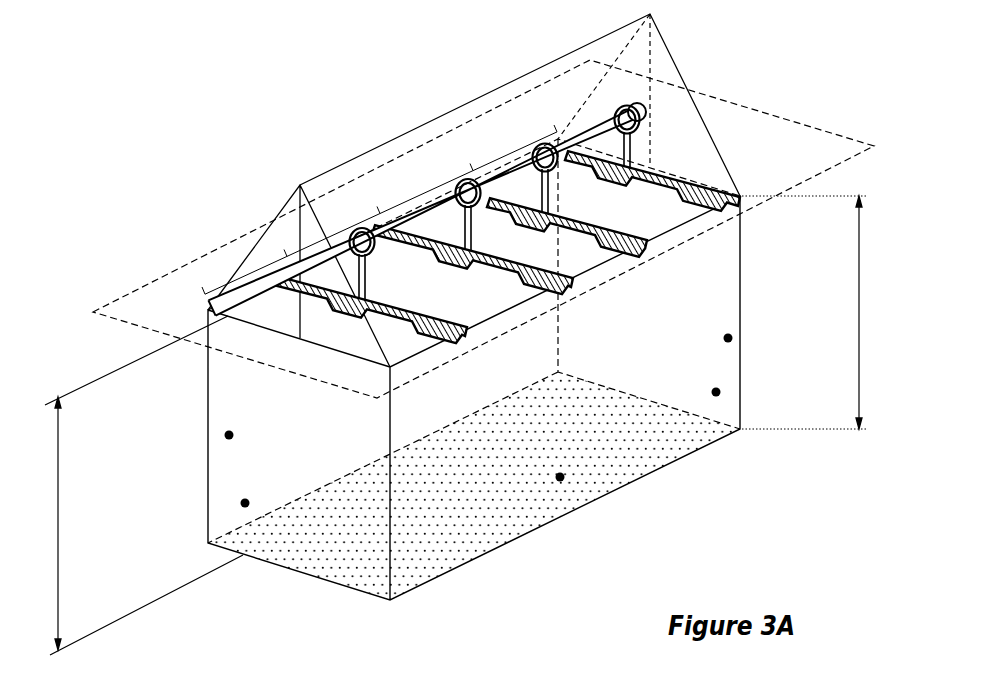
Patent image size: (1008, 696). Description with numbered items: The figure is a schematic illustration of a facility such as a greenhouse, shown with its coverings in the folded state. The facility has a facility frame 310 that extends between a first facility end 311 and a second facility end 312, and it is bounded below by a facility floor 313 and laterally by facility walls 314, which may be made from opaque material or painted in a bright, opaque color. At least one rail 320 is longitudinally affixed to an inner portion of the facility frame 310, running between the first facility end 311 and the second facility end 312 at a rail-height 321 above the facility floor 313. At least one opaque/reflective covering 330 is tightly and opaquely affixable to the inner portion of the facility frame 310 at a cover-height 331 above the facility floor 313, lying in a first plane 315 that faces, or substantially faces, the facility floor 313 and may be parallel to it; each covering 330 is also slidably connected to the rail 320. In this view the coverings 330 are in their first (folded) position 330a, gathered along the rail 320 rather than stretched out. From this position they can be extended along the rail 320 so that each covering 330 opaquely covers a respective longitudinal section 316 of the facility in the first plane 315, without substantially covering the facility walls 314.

The facility frame 310 is at (392, 530).
The first facility end 311 is at (688, 61).
The second facility end 312 is at (283, 235).
The facility floor 313 is at (560, 480).
The facility walls 314 is at (716, 392).
The first plane 315 is at (147, 285).
The longitudinal section 316 is at (252, 284).
The rail 320 is at (607, 120).
The rail-height 321 is at (58, 513).
The opaque/reflective covering 330 is at (648, 241).
The first (folded) position 330a is at (702, 174).
The cover-height 331 is at (860, 330).